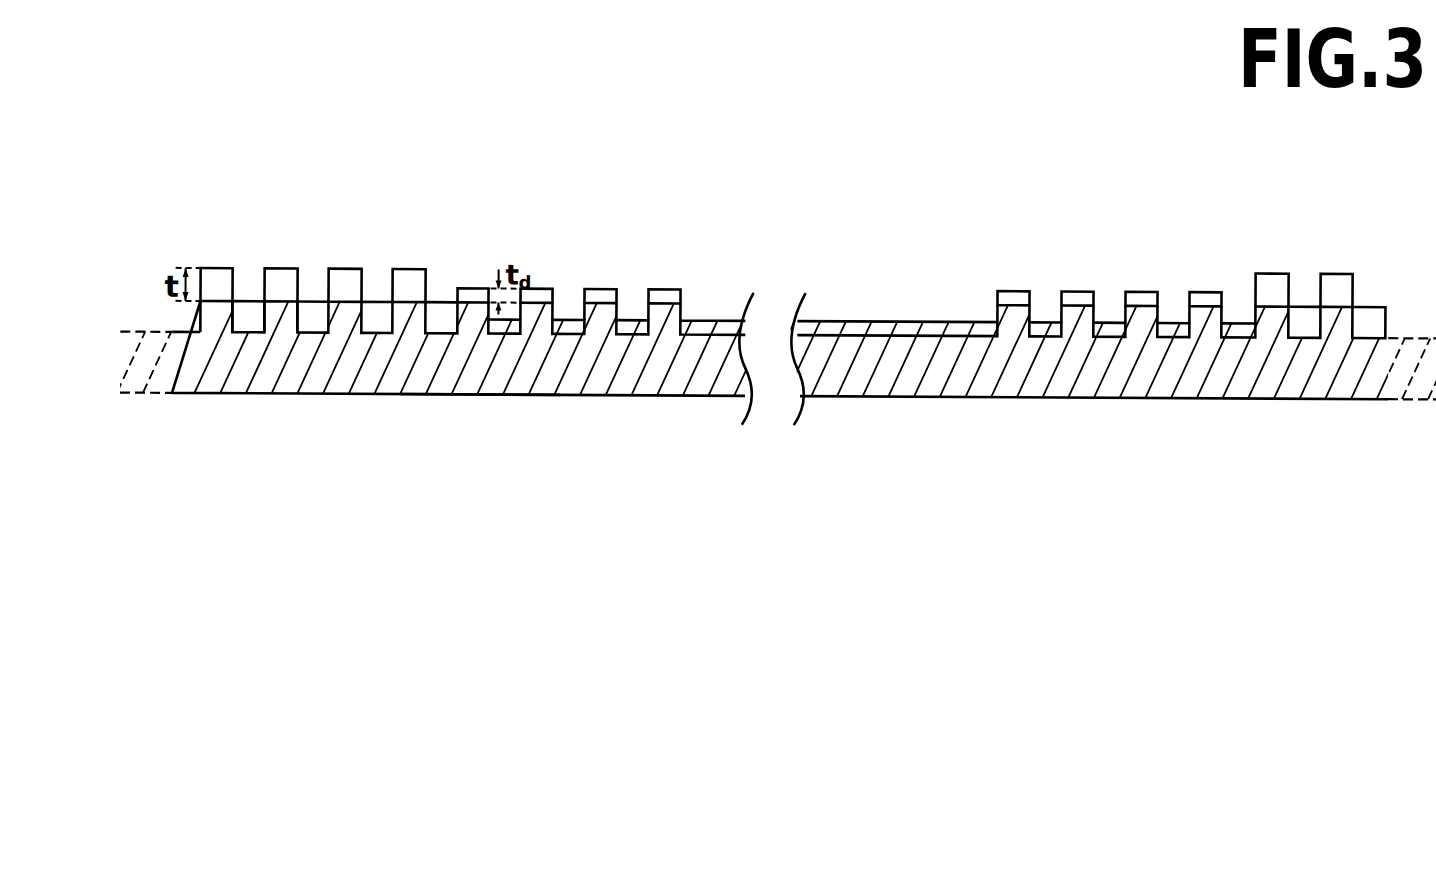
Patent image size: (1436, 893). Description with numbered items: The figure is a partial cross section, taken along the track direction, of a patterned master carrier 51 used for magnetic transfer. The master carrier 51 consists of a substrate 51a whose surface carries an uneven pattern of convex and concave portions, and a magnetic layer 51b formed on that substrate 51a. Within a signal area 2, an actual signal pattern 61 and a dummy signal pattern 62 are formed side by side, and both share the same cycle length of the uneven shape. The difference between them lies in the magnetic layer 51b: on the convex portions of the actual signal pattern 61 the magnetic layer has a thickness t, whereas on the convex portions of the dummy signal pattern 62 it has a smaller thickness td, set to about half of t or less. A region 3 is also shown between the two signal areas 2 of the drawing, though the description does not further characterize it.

The signal area 2 is at (1328, 183).
The intermediate flat region 3 is at (998, 248).
The master carrier 51 is at (375, 396).
The substrate 51a is at (457, 378).
The magnetic layer 51b is at (278, 292).
The actual signal pattern 61 is at (1385, 248).
The dummy signal pattern 62 is at (1257, 248).